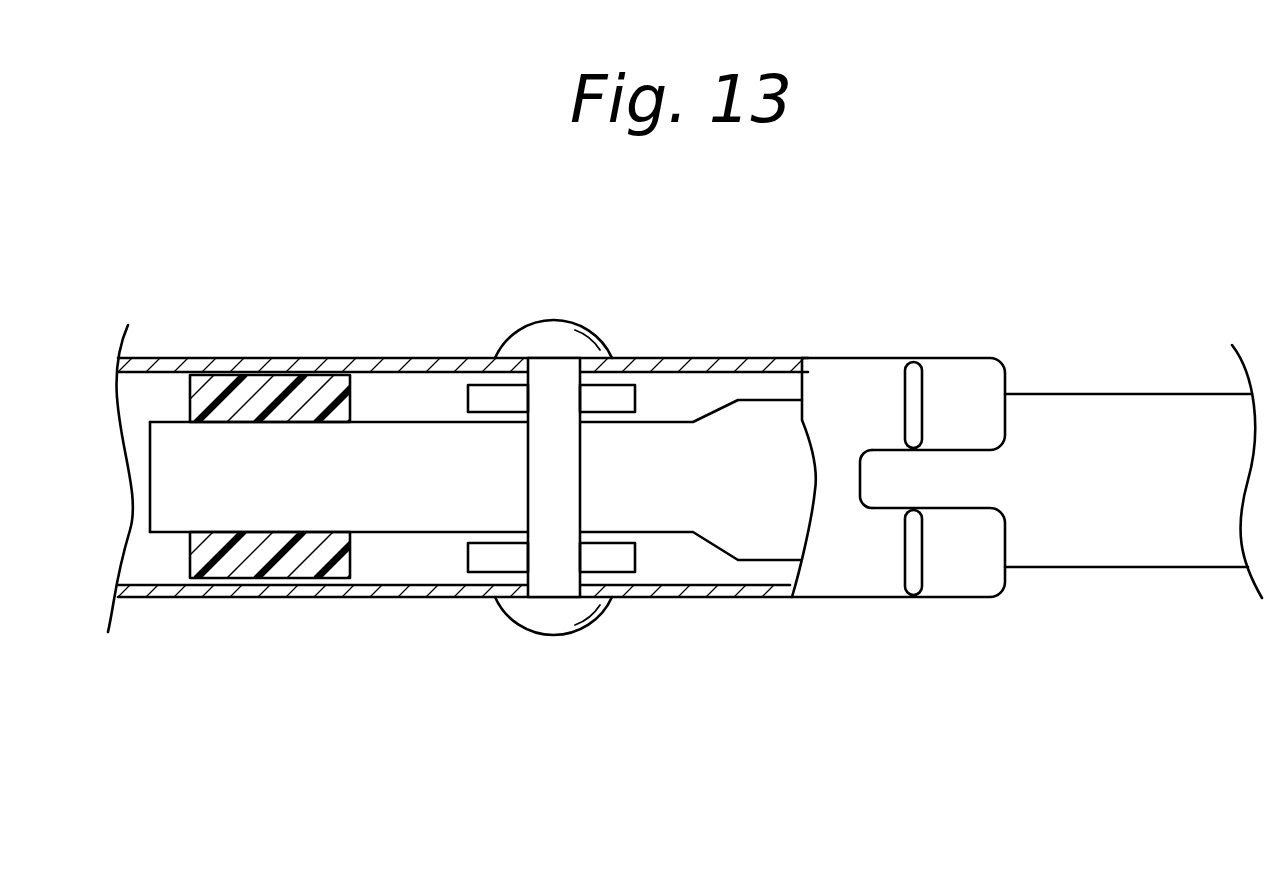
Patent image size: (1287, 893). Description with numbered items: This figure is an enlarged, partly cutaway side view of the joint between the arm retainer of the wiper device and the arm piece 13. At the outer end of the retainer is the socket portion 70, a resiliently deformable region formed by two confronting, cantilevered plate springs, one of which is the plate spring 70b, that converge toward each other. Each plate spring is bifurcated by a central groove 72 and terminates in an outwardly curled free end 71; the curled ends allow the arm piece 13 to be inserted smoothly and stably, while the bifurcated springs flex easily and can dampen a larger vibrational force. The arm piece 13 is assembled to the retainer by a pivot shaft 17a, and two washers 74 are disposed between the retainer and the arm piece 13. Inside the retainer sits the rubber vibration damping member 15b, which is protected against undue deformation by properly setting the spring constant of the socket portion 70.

The arm piece 13 is at (1095, 415).
The rubber vibration damping member 15b is at (278, 560).
The pivot shaft 17a is at (543, 347).
The washer 74 is at (618, 400).
The socket portion 70 is at (950, 486).
The plate spring 70b is at (887, 547).
The outwardly curled free end 71 is at (947, 385).
The central groove 72 is at (970, 502).